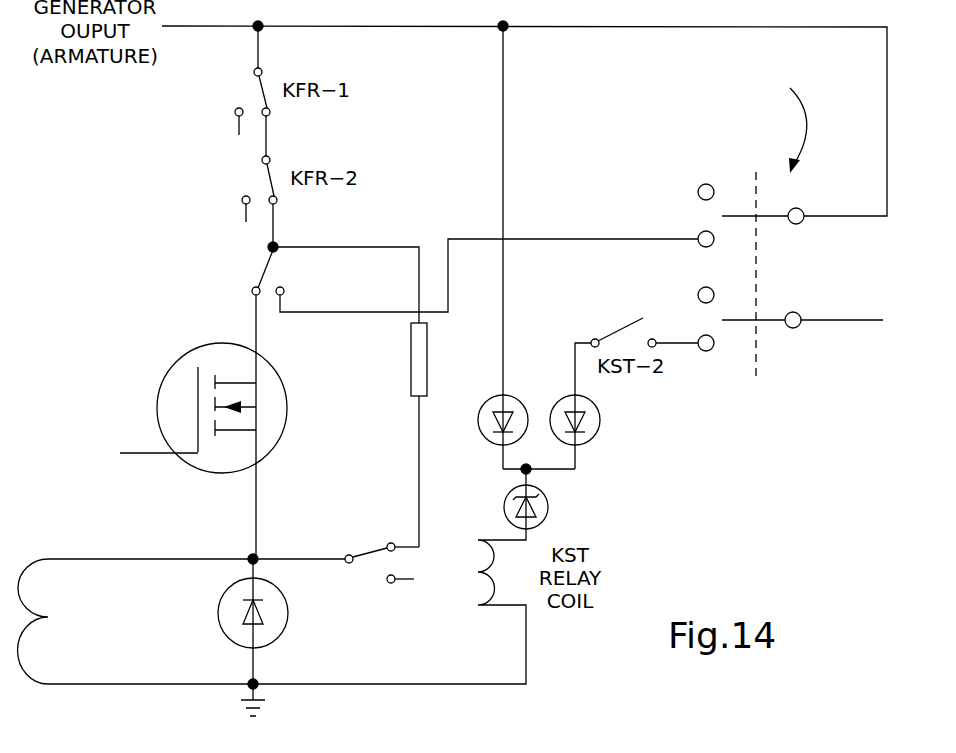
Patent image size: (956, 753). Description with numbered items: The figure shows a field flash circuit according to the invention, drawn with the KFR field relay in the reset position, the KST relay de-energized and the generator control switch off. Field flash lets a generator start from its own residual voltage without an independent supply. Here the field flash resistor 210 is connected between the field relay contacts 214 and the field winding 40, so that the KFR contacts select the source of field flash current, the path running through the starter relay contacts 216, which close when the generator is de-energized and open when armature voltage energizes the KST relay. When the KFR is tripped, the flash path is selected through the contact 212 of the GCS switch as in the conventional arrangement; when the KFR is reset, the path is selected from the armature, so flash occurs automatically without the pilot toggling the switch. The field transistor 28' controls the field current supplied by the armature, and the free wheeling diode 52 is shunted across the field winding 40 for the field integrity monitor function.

The field relay contacts 214 is at (245, 262).
The field flash resistor 210 is at (429, 376).
The field transistor 28' is at (151, 427).
The starter relay contacts 216 is at (377, 526).
The field winding 40 is at (22, 568).
The free wheeling diode 52 is at (220, 602).
The contact of a generator control switch 212 is at (810, 265).